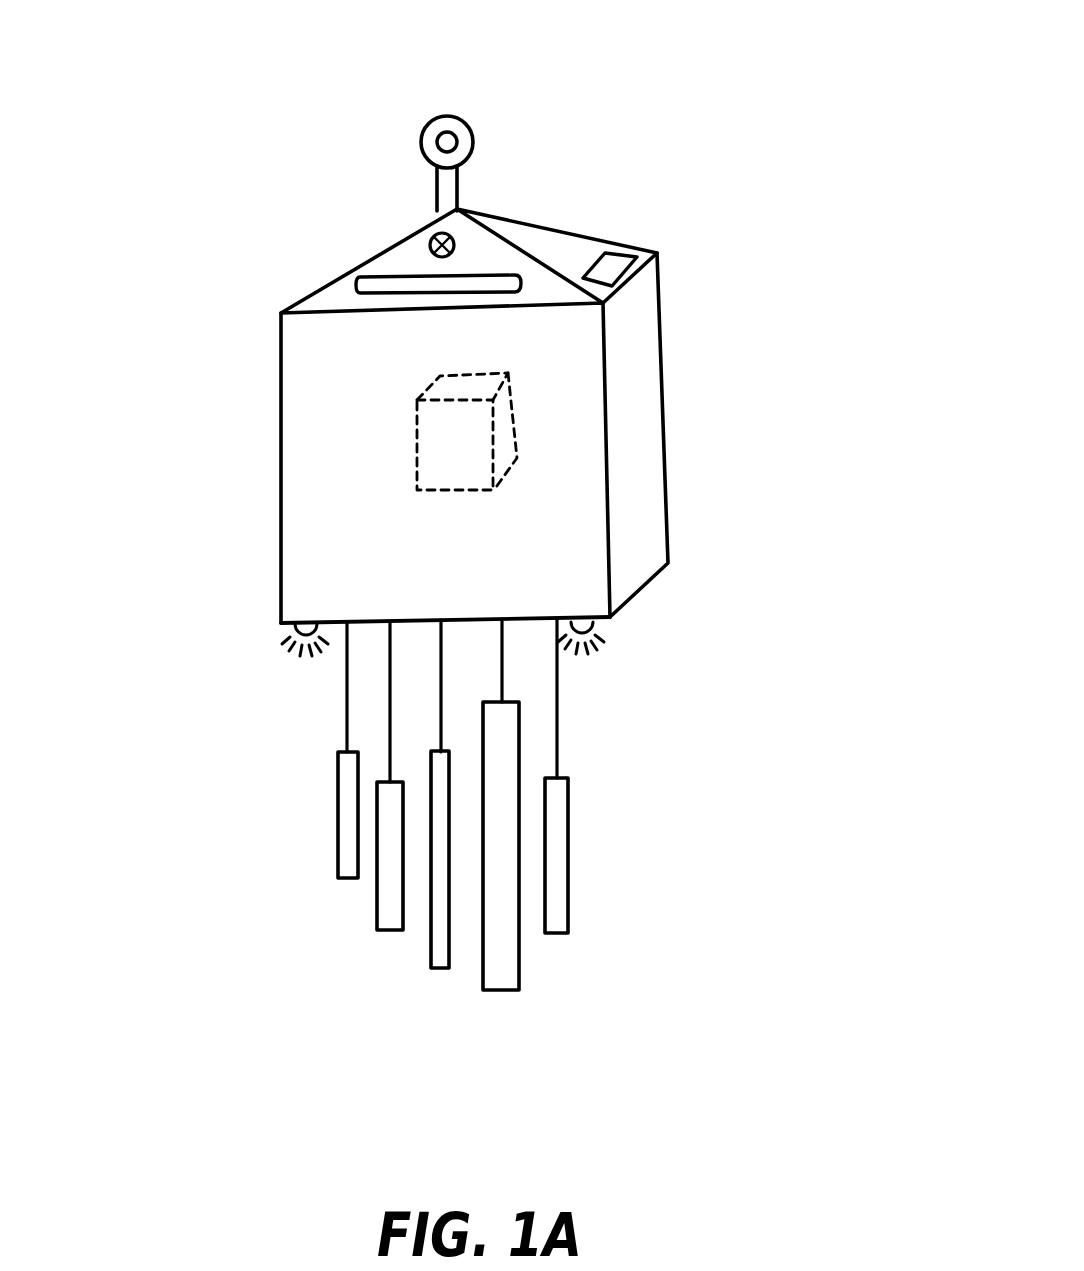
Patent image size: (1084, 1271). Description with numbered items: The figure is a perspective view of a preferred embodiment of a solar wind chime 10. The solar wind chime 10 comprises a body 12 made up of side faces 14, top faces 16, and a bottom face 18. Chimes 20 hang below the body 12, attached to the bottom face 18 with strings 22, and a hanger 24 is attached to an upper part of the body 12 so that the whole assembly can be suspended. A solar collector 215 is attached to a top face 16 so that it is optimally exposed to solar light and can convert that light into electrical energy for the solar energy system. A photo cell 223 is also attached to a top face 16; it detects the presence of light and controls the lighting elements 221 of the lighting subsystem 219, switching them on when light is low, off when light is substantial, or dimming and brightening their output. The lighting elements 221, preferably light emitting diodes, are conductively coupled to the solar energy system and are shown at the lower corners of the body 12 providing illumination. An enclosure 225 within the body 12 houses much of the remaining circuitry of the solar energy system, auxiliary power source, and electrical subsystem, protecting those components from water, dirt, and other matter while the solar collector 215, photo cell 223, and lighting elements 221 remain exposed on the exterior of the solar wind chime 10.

The solar wind chime 10 is at (768, 163).
The body 12 is at (675, 366).
The side faces 14 is at (637, 445).
The top faces 16 is at (557, 243).
The bottom face 18 is at (622, 610).
The chimes 20 is at (437, 953).
The strings 22 is at (440, 692).
The hanger 24 is at (454, 115).
The solar collector 215 is at (605, 252).
The lighting subsystem 219 is at (272, 612).
The lighting elements 221 is at (280, 625).
The photo cell 223 is at (452, 238).
The enclosure 225 is at (447, 447).